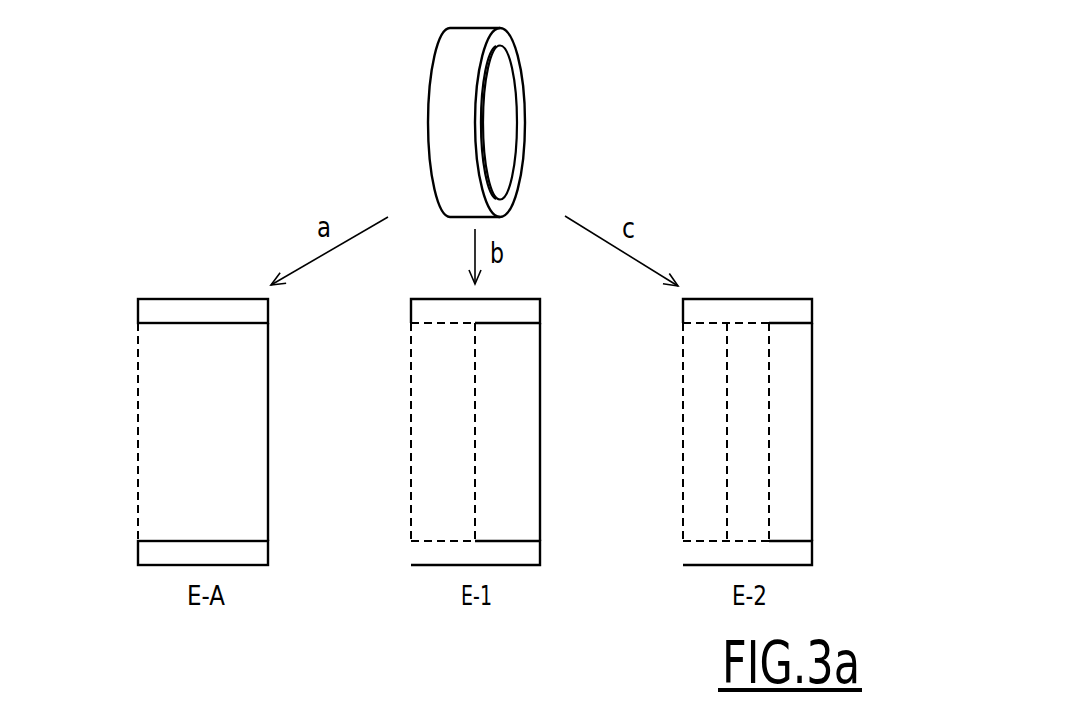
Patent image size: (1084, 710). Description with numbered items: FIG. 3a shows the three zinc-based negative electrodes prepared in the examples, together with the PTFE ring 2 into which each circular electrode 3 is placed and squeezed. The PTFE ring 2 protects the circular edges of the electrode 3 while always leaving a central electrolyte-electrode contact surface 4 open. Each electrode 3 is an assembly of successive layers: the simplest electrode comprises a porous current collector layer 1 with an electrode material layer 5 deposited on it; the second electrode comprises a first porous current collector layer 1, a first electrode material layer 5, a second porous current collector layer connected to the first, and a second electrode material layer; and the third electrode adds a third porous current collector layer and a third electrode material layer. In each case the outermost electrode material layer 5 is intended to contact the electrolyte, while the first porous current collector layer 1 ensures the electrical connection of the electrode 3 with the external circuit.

The porous current collector layer 1 is at (138, 462).
The PTFE ring 2 is at (443, 119).
The circular electrode 3 is at (420, 37).
The central electrolyte-electrode contact surface 4 is at (505, 110).
The electrode material layer 5 is at (213, 427).